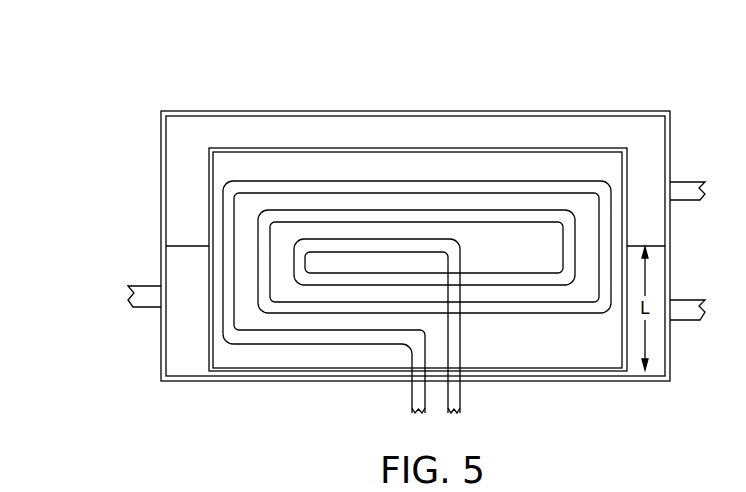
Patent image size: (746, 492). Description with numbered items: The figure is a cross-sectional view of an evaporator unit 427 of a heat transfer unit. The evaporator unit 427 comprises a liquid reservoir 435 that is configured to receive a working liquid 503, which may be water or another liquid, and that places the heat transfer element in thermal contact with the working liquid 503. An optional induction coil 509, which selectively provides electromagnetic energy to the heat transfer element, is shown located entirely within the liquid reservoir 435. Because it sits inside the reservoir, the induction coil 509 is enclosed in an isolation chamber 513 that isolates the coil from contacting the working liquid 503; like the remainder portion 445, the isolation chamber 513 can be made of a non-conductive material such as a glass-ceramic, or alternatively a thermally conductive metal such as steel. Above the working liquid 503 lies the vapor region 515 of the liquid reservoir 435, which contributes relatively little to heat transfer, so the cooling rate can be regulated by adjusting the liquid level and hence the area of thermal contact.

The evaporator unit 427 is at (623, 99).
The liquid reservoir 435 is at (126, 159).
The remainder portion 445 is at (204, 111).
The working liquid 503 is at (185, 245).
The induction coil 509 is at (533, 314).
The isolation chamber 513 is at (208, 368).
The vapor region 515 is at (410, 133).